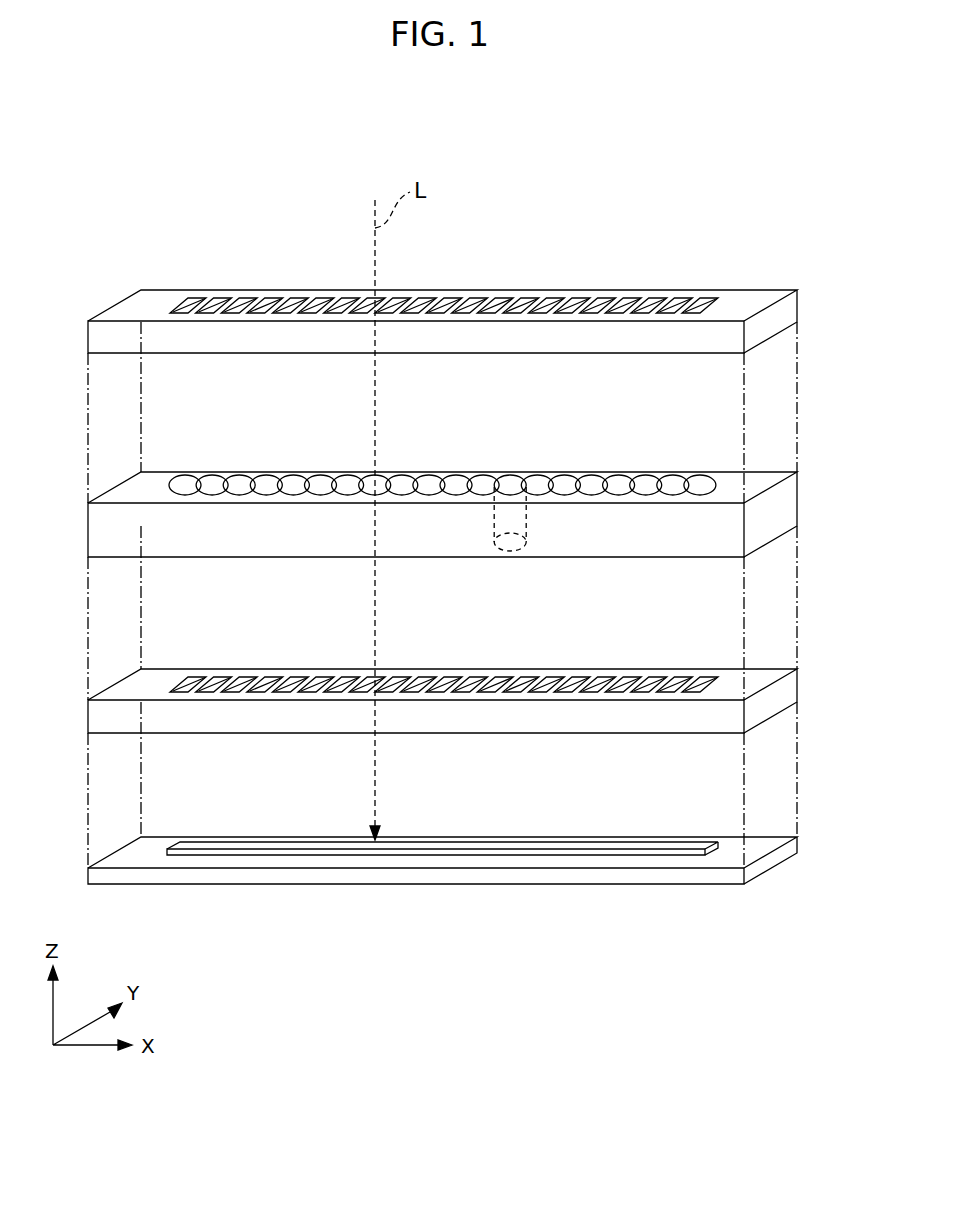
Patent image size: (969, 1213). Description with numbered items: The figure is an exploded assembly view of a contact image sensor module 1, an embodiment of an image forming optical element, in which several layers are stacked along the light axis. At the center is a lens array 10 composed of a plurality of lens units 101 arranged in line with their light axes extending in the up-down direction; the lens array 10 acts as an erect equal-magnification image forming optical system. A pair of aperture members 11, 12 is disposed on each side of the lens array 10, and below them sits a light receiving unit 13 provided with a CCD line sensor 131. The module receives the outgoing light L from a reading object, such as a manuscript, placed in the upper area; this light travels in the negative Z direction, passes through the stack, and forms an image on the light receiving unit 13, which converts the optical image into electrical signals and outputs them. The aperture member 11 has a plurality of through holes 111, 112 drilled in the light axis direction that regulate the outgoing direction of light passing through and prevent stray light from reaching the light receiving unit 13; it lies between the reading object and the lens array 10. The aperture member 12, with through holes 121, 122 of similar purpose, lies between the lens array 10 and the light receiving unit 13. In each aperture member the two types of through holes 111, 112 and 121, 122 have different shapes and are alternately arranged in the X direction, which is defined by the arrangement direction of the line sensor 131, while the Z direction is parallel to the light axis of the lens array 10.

The contact image sensor module 1 is at (608, 220).
The lens array 10 is at (778, 510).
The lens unit 101 is at (512, 483).
The aperture member 11 is at (752, 297).
The through hole 111 is at (198, 300).
The through hole 112 is at (200, 303).
The aperture member 12 is at (778, 703).
The through hole 121 is at (198, 680).
The through hole 122 is at (200, 683).
The light receiving unit 13 is at (780, 855).
The CCD line sensor 131 is at (575, 848).